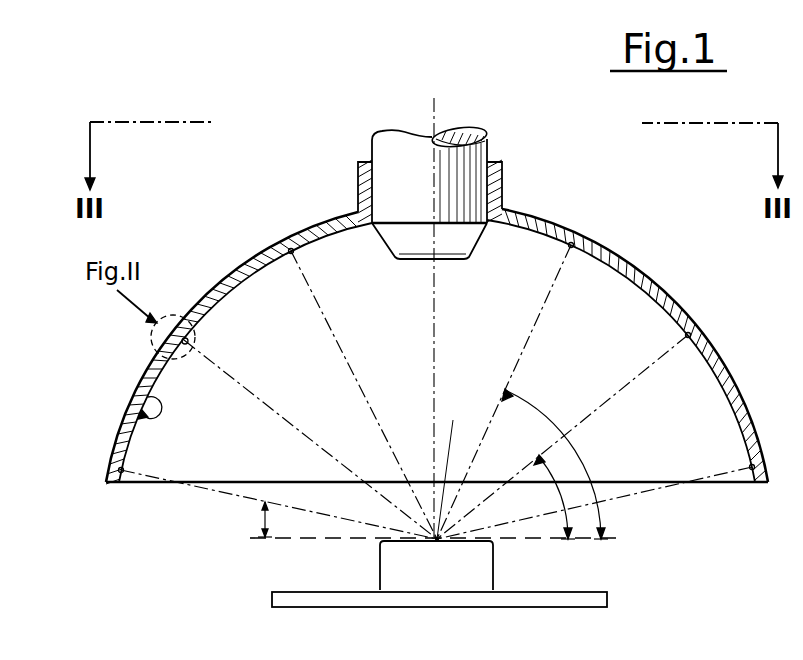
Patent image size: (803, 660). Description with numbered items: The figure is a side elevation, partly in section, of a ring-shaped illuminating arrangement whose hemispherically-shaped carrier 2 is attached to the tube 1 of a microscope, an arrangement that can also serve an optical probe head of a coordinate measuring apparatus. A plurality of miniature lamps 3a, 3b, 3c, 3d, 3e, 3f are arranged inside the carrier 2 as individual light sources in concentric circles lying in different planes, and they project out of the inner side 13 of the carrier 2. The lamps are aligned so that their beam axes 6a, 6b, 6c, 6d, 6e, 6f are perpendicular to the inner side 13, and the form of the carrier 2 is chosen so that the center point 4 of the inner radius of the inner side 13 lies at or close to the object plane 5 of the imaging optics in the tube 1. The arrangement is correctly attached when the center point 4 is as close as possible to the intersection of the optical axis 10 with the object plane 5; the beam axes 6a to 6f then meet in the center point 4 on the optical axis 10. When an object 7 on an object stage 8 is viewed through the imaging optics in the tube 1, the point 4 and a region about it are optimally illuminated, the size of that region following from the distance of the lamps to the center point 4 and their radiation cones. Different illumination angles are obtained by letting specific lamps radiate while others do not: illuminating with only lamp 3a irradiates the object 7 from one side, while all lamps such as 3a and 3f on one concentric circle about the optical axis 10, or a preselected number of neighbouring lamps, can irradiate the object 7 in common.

The tube 1 is at (468, 158).
The carrier 2 is at (642, 273).
The miniature lamp 3a is at (127, 473).
The miniature lamp 3b is at (197, 342).
The miniature lamp 3c is at (294, 254).
The miniature lamp 3d is at (570, 247).
The miniature lamp 3e is at (684, 335).
The miniature lamp 3f is at (750, 464).
The center point 4 is at (437, 540).
The object plane 5 is at (540, 538).
The beam axis 6a is at (161, 472).
The beam axis 6b is at (265, 398).
The beam axis 6c is at (333, 327).
The beam axis 6d is at (515, 363).
The beam axis 6e is at (623, 382).
The beam axis 6f is at (715, 470).
The object 7 is at (480, 575).
The object stage 8 is at (504, 606).
The optical axis 10 is at (434, 107).
The inner side 13 is at (148, 397).